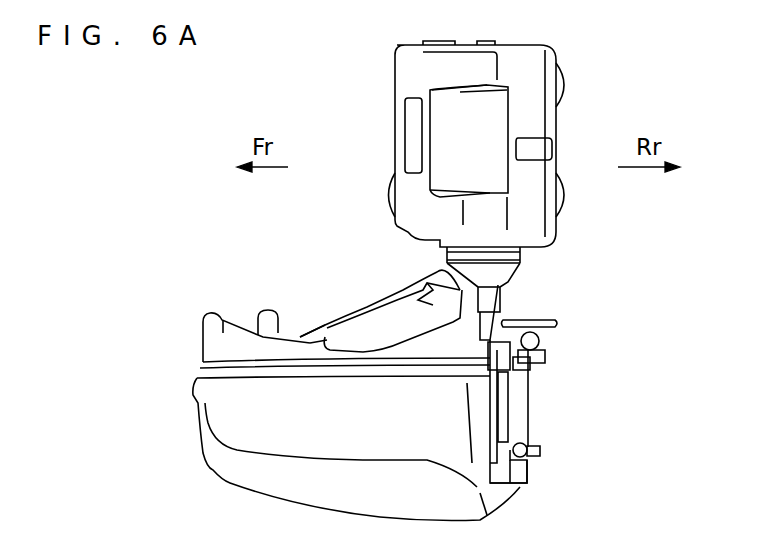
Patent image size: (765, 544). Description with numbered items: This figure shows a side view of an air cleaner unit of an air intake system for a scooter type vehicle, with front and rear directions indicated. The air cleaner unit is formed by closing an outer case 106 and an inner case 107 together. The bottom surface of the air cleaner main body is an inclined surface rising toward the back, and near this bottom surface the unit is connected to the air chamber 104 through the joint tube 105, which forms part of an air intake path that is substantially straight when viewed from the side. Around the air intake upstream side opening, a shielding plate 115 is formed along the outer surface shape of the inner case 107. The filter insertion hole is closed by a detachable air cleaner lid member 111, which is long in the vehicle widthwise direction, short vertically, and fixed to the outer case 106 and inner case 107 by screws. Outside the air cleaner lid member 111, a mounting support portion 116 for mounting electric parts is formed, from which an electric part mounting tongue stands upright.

The air chamber 104 is at (540, 60).
The joint tube 105 is at (513, 271).
The outer case 106 is at (225, 478).
The inner case 107 is at (213, 310).
The air cleaner lid member 111 is at (530, 477).
The shielding plate 115 is at (397, 317).
The mounting support portion 116 is at (517, 387).